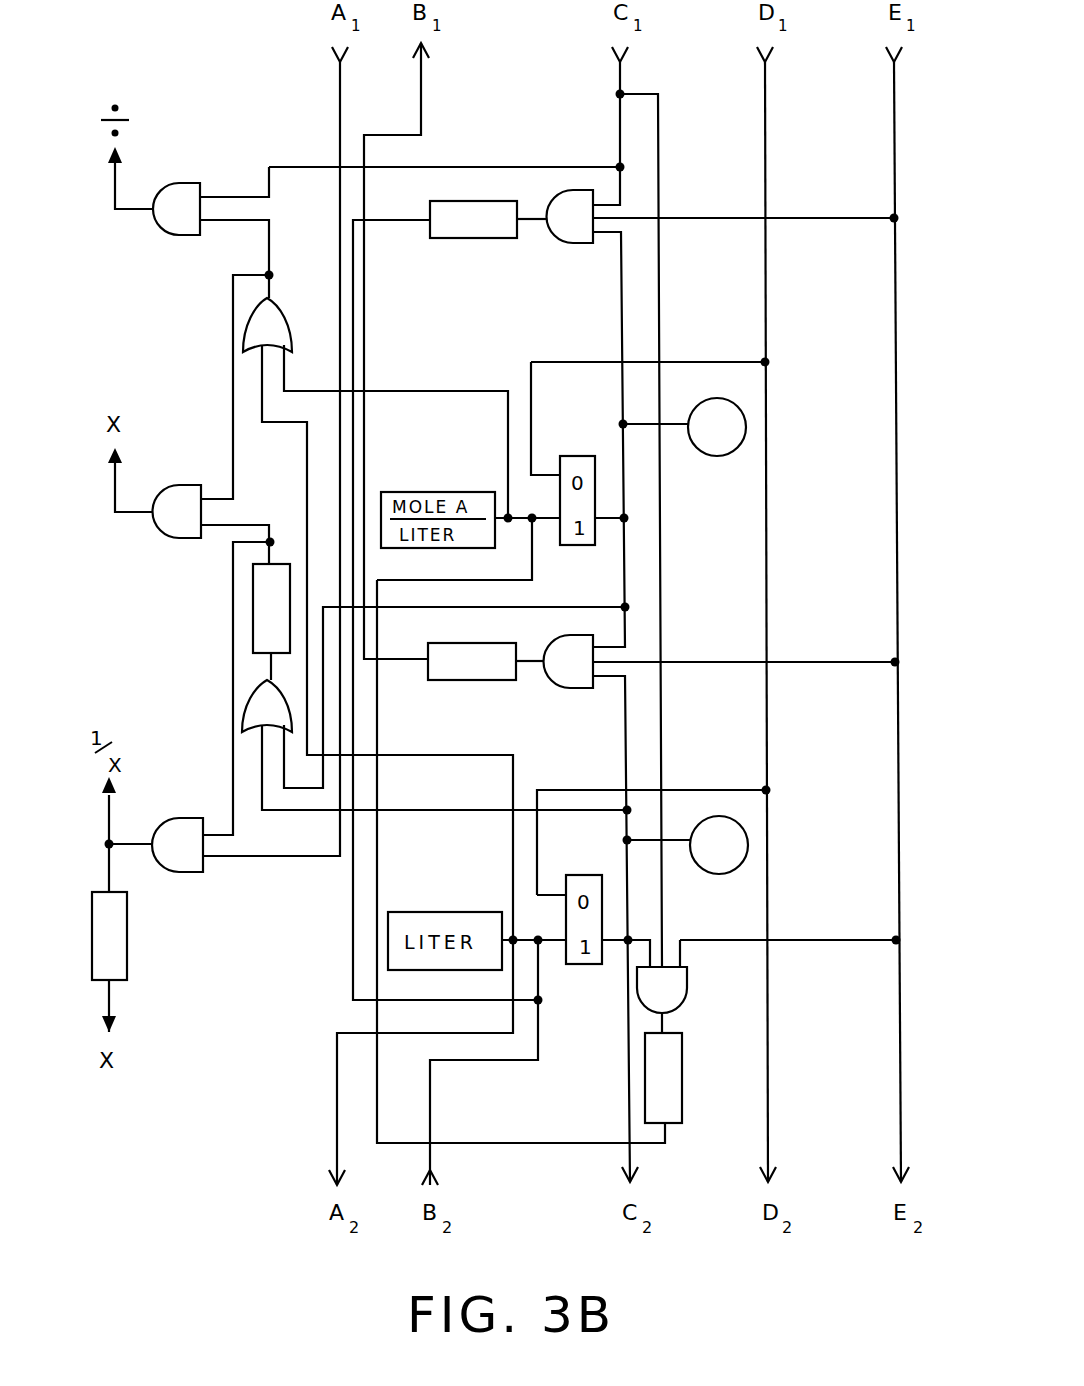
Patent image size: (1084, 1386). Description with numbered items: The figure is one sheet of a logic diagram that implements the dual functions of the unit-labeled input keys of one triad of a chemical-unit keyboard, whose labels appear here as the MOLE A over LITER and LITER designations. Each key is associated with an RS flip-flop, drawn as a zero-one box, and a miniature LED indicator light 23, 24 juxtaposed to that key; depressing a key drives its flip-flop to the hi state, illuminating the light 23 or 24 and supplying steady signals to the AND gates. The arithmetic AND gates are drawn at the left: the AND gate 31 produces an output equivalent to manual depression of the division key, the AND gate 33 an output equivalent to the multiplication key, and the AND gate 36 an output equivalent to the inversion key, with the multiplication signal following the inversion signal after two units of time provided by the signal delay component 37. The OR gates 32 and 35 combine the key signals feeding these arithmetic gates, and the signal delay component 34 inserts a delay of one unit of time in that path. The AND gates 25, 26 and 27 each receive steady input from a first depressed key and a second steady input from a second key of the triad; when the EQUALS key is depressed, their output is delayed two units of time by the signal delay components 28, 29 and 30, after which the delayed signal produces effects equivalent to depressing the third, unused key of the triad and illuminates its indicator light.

The LED indicator light 23 is at (717, 427).
The LED indicator light 24 is at (719, 845).
The AND gate 25 is at (570, 216).
The AND gate 26 is at (569, 661).
The AND gate 27 is at (662, 990).
The signal delay component 28 is at (473, 219).
The signal delay component 29 is at (472, 661).
The signal delay component 30 is at (663, 1078).
The AND gate 31 is at (176, 209).
The OR gate 32 is at (267, 325).
The AND gate 33 is at (177, 511).
The signal delay component 34 is at (271, 608).
The OR gate 35 is at (267, 706).
The AND gate 36 is at (177, 845).
The signal delay component 37 is at (109, 936).